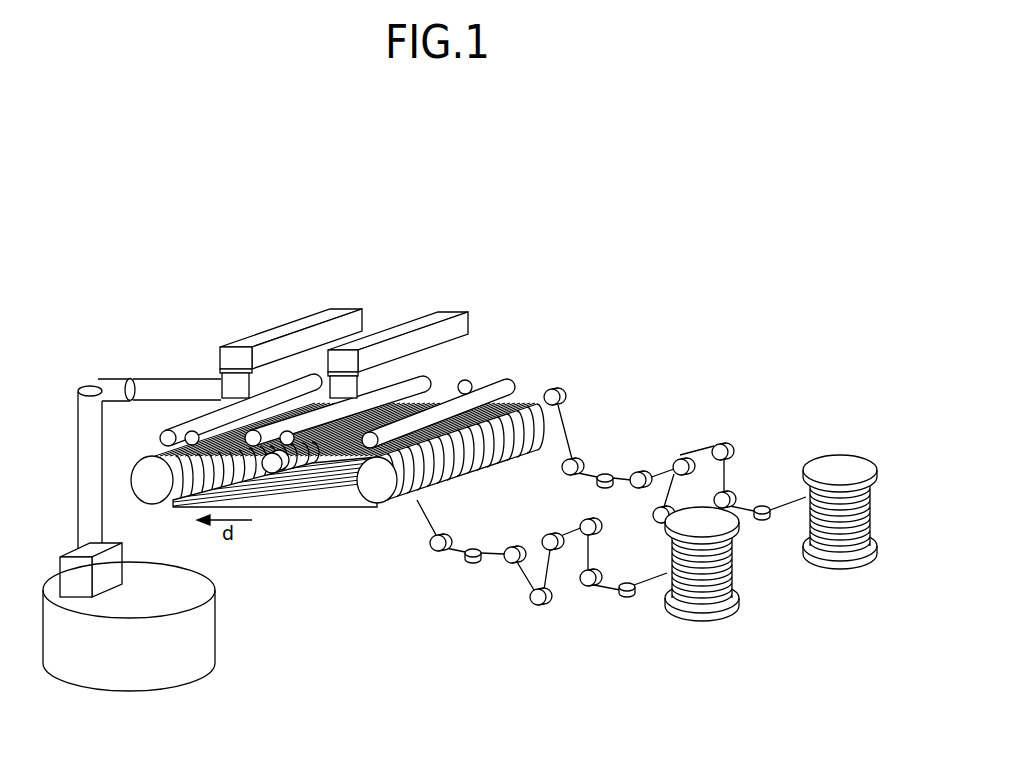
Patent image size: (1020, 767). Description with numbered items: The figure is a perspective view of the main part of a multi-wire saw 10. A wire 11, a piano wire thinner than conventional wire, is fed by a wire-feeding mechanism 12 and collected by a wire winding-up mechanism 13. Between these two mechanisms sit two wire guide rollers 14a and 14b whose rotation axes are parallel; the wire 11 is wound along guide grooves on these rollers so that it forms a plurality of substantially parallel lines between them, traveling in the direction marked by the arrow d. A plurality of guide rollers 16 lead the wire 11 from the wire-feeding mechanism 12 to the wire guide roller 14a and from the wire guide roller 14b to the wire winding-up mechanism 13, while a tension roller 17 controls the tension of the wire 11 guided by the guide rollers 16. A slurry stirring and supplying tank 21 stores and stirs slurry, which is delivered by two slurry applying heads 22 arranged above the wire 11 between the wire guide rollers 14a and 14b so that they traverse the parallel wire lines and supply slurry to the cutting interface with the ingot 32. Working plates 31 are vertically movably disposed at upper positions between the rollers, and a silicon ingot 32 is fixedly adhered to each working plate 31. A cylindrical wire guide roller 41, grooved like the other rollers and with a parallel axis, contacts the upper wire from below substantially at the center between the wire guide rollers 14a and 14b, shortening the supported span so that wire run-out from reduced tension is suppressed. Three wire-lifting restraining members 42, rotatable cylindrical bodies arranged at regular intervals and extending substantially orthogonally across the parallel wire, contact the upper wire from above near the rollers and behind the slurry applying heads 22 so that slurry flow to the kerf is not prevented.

The multi-wire saw 10 is at (500, 280).
The wire 11 is at (566, 430).
The wire-feeding mechanism 12 is at (842, 571).
The wire winding-up mechanism 13 is at (705, 612).
The wire guide roller 14a is at (155, 502).
The wire guide roller 14b is at (375, 502).
The guide rollers 16 is at (478, 548).
The tension roller 17 is at (662, 507).
The slurry stirring and supplying tank 21 is at (180, 668).
The slurry applying heads 22 is at (214, 433).
The working plates 31 is at (400, 325).
The ingot 32 is at (233, 385).
The wire guide roller 41 is at (272, 473).
The wire-lifting restraining members 42 is at (162, 432).